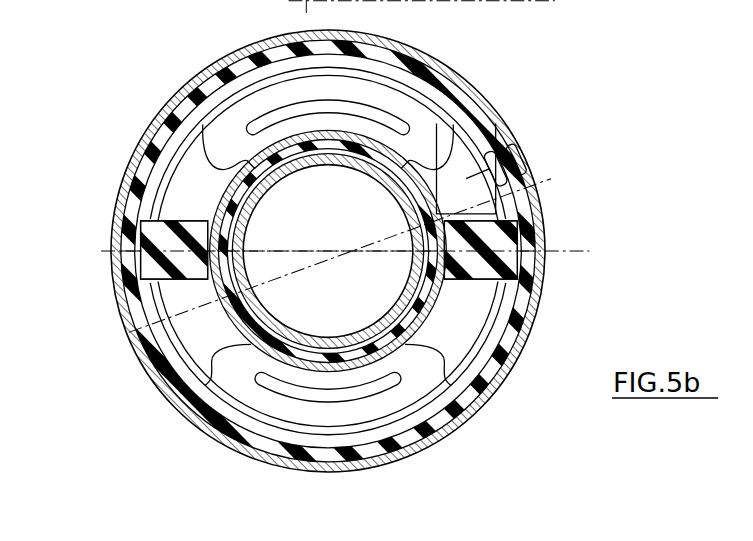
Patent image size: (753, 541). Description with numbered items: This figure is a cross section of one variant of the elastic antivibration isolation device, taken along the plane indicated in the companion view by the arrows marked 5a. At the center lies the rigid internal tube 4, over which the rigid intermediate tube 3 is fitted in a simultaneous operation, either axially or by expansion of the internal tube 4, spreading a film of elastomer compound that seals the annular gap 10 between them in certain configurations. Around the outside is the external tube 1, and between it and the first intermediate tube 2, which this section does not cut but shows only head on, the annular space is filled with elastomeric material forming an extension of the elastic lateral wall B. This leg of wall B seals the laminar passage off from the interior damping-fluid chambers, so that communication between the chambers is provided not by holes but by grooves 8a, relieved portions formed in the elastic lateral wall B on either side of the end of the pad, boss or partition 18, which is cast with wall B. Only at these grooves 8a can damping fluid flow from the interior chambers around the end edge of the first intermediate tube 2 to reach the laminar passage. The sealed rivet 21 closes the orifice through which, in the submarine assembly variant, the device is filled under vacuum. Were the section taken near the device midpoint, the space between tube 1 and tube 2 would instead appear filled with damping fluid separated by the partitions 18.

The external tube 1 is at (440, 441).
The first intermediate tube 2 is at (262, 432).
The rigid intermediate tube 3 is at (262, 150).
The rigid internal tube 4 is at (230, 208).
The groove 8a is at (486, 148).
The annular gap 10 is at (500, 348).
The pad (or boss or partition) 18 is at (150, 265).
The sealed rivet 21 is at (522, 162).
The elastic lateral wall B is at (410, 436).
The section line 5a is at (110, 378).